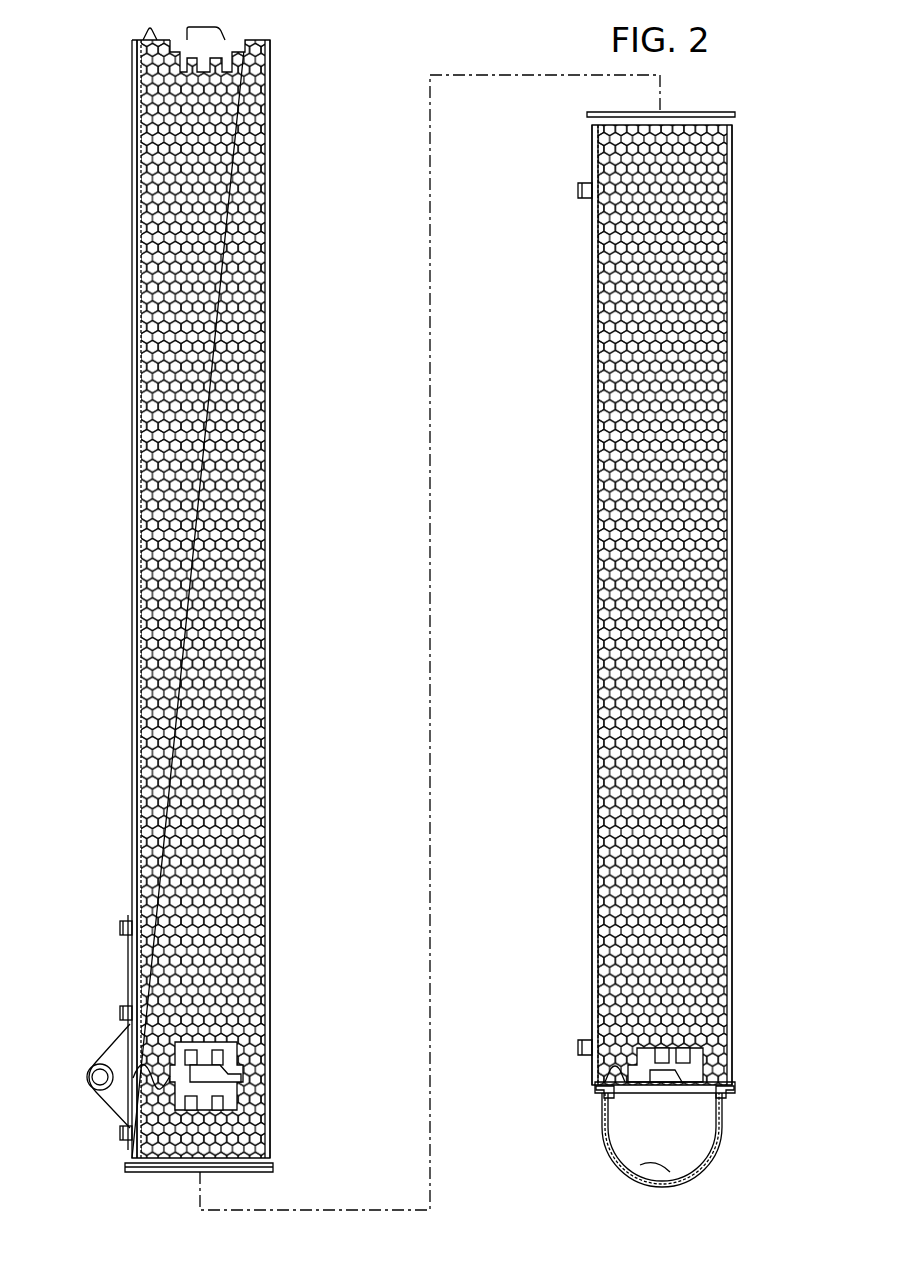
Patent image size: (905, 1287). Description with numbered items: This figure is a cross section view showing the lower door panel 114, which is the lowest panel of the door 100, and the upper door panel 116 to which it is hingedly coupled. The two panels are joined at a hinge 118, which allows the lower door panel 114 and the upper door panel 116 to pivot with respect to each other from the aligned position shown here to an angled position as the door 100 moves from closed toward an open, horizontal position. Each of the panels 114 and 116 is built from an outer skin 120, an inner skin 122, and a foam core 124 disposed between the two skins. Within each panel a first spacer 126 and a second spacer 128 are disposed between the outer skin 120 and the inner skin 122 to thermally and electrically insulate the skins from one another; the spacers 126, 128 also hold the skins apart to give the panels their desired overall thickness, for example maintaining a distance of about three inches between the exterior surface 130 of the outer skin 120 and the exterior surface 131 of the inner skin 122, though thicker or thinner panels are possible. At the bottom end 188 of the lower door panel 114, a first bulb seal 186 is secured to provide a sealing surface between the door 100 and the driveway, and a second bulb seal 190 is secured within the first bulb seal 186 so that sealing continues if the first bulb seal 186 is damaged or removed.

The door 100 is at (92, 242).
The lower door panel 114 is at (735, 715).
The upper door panel 116 is at (425, 589).
The hinge 118 is at (96, 1096).
The outer skin 120 is at (270, 706).
The inner skin 122 is at (138, 652).
The foam core 124 is at (245, 325).
The first spacer 126 is at (232, 38).
The second spacer 128 is at (240, 1062).
The exterior surface of the outer skin 130 is at (270, 560).
The exterior surface of the inner skin 131 is at (134, 368).
The first bulb seal 186 is at (700, 1172).
The bottom end 188 is at (612, 1098).
The second bulb seal 190 is at (656, 1182).